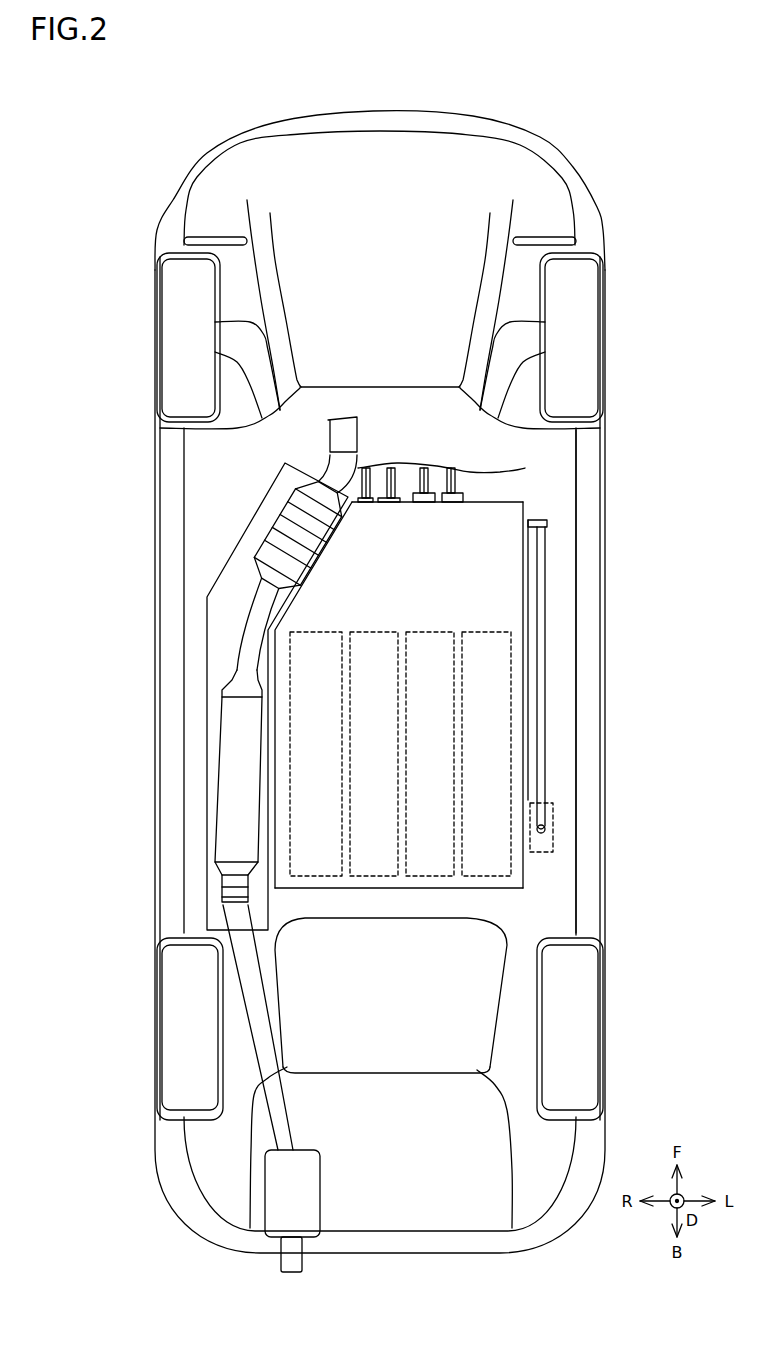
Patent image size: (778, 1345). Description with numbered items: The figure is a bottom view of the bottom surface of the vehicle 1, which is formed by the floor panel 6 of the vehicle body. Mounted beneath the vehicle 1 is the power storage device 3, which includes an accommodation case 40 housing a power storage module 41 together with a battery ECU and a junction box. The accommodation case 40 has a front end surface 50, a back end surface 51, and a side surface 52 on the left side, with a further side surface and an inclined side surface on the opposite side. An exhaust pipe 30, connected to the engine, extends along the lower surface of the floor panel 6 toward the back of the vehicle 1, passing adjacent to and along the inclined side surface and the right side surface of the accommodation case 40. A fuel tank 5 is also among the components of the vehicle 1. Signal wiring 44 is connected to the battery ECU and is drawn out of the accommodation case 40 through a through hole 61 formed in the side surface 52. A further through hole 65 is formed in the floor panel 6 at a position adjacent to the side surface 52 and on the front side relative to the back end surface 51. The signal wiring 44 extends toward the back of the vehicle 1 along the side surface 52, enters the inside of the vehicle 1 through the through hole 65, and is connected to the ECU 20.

The vehicle 1 is at (209, 111).
The power storage device 3 is at (523, 583).
The fuel tank 5 is at (315, 1028).
The floor panel 6 is at (557, 788).
The ECU 20 is at (552, 852).
The exhaust pipe 30 is at (233, 777).
The accommodation case 40 is at (500, 617).
The power storage module 41 is at (500, 683).
The signal wiring 44 is at (545, 735).
The front end surface 50 is at (500, 503).
The back end surface 51 is at (488, 890).
The side surface 52 is at (523, 652).
The through hole 61 is at (545, 522).
The through hole 65 is at (545, 829).